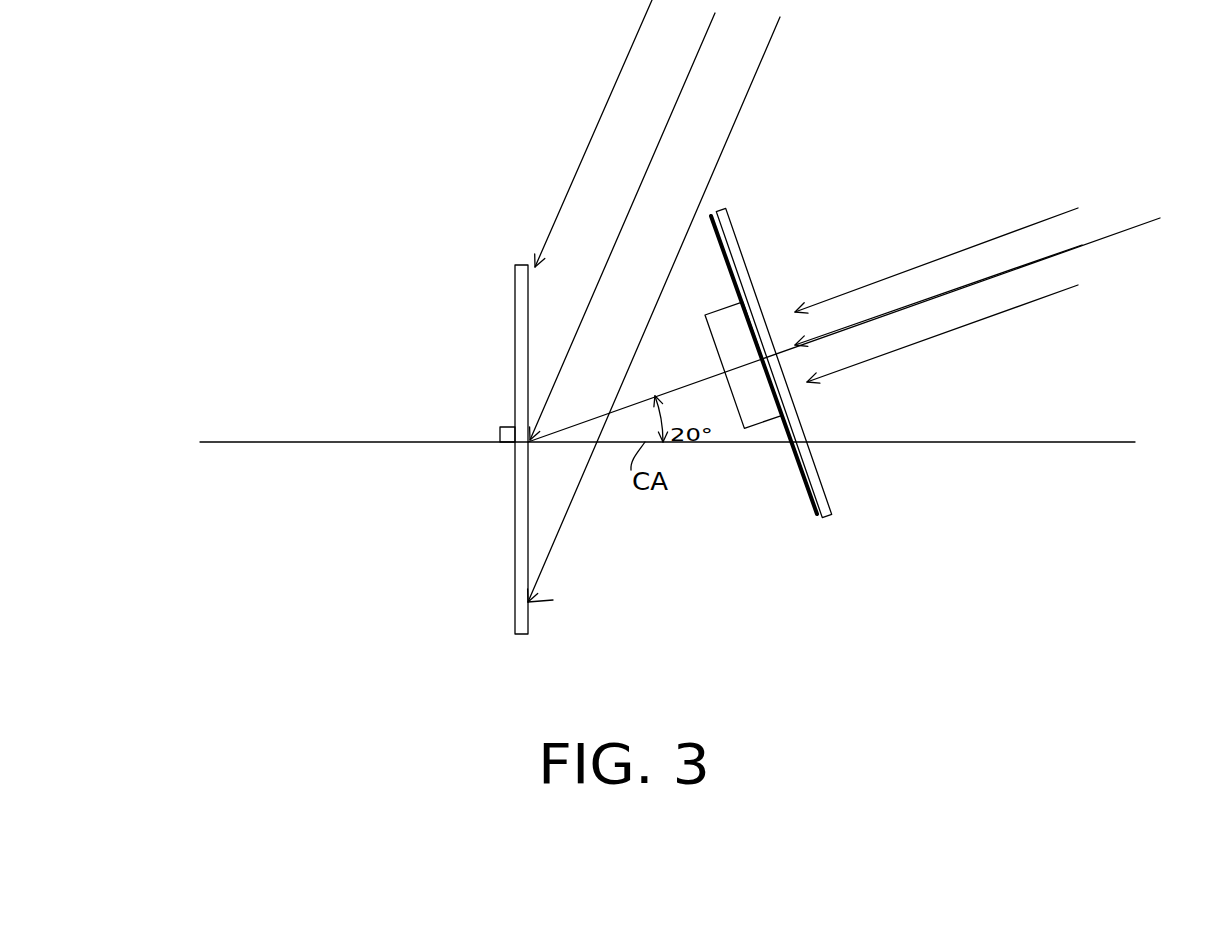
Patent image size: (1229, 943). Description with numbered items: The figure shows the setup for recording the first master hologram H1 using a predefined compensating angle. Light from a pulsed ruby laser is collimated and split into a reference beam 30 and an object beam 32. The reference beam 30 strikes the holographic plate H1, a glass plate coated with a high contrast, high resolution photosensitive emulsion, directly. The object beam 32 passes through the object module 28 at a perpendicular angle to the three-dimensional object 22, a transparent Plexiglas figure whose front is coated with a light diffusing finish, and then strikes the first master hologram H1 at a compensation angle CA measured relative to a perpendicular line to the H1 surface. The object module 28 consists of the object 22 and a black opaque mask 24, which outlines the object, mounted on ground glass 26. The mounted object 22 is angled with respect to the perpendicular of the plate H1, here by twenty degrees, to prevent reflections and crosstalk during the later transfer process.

The three-dimensional object 22 is at (742, 418).
The black opaque mask 24 is at (807, 482).
The ground glass 26 is at (850, 367).
The object module 28 is at (783, 215).
The reference beam 30 is at (627, 16).
The object beam 32 is at (1033, 222).
The first master hologram H1 is at (513, 309).